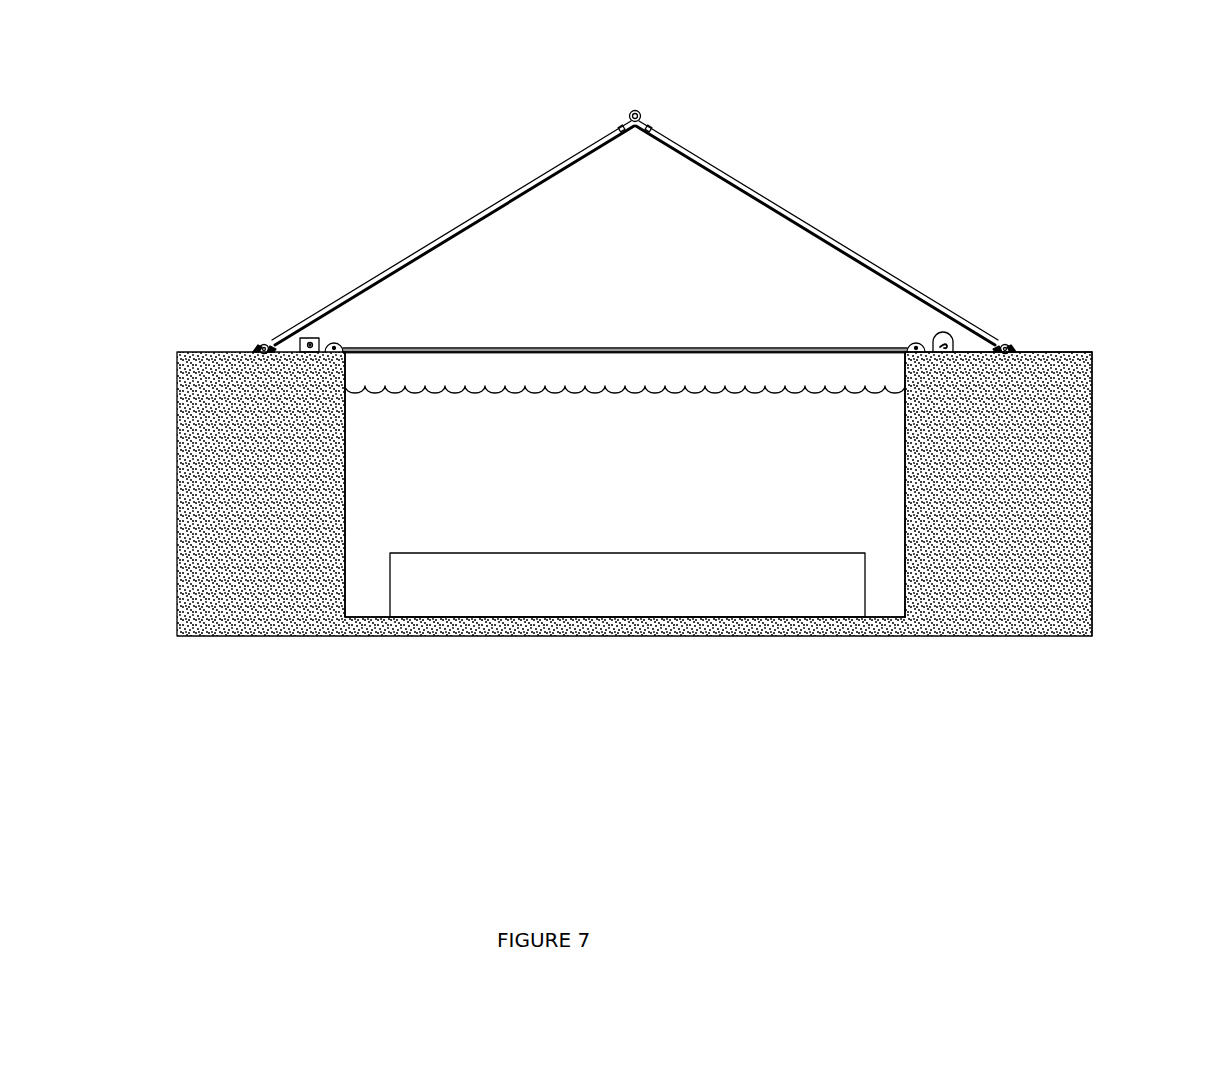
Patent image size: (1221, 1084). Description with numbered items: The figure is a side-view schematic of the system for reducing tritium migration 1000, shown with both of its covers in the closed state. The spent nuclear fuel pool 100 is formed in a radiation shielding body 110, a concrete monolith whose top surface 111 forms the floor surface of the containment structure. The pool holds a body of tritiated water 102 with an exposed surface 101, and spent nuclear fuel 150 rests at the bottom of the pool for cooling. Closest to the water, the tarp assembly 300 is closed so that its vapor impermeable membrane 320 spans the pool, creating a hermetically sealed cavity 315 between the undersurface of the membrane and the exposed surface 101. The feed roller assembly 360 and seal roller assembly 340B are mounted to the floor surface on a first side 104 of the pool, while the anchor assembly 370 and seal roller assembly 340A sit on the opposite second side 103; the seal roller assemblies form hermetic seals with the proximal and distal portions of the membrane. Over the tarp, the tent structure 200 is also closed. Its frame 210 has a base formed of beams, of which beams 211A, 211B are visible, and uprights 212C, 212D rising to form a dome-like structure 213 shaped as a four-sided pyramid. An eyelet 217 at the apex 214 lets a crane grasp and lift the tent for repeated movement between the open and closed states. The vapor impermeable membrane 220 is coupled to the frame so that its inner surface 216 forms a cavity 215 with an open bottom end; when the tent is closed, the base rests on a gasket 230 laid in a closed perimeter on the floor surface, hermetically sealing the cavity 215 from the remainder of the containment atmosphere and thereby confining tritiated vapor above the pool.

The system for reducing tritium migration 1000 is at (296, 132).
The spent nuclear fuel pool 100 is at (343, 593).
The radiation shielding body 110 is at (1043, 400).
The top surface 111 is at (1040, 350).
The body of tritiated water 102 is at (628, 489).
The second side 103 is at (353, 358).
The first side 104 is at (899, 358).
The exposed surface 101 is at (702, 388).
The spent nuclear fuel 150 is at (628, 594).
The tarp assembly 300 is at (723, 340).
The vapor impermeable membrane 320 is at (548, 348).
The hermetically sealed cavity 315 is at (570, 362).
The tent structure 200 is at (635, 187).
The frame 210 is at (817, 214).
The inner surface 216 is at (768, 208).
The upright 212C is at (782, 212).
The vapor impermeable membrane 220 is at (453, 233).
The upright 212D is at (488, 213).
The dome-like structure 213 is at (440, 230).
The apex 214 is at (649, 125).
The cavity 215 is at (653, 234).
The eyelet 217 is at (632, 109).
The beam 211A is at (1006, 343).
The beam 211B is at (265, 343).
The gasket 230 is at (254, 350).
The seal roller assembly 340A is at (334, 328).
The seal roller assembly 340B is at (916, 328).
The feed roller assembly 360 is at (943, 322).
The anchor assembly 370 is at (310, 327).